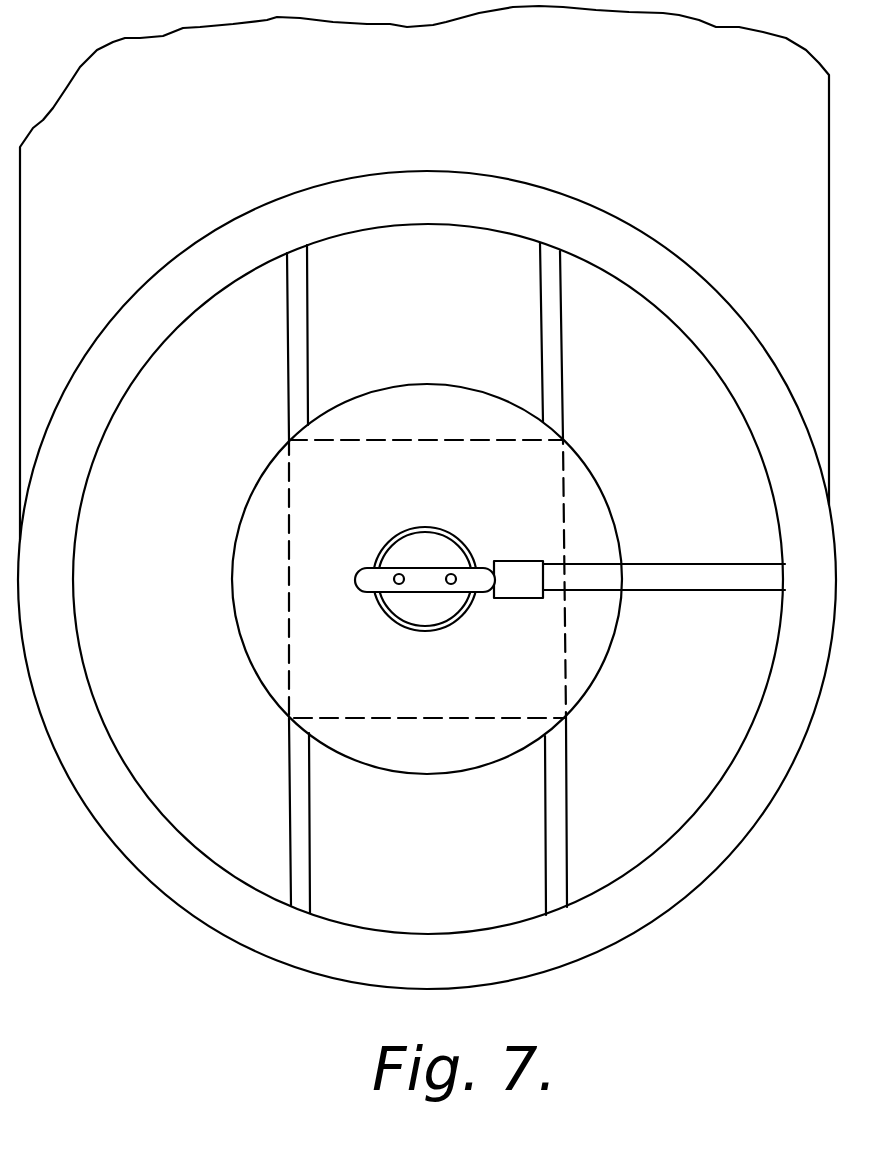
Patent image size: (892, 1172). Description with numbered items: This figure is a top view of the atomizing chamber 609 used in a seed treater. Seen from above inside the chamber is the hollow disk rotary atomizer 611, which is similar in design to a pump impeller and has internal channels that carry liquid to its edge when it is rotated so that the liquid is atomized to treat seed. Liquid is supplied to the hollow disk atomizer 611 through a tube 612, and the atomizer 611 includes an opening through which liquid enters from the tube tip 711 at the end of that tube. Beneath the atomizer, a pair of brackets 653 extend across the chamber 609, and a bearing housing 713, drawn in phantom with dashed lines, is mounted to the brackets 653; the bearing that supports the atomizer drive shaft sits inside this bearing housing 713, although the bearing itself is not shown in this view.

The atomizing chamber 609 is at (613, 968).
The hollow disk rotary atomizer 611 is at (262, 616).
The tube 612 is at (666, 576).
The brackets 653 is at (535, 794).
The tube tip 711 is at (475, 577).
The bearing housing 713 is at (412, 440).